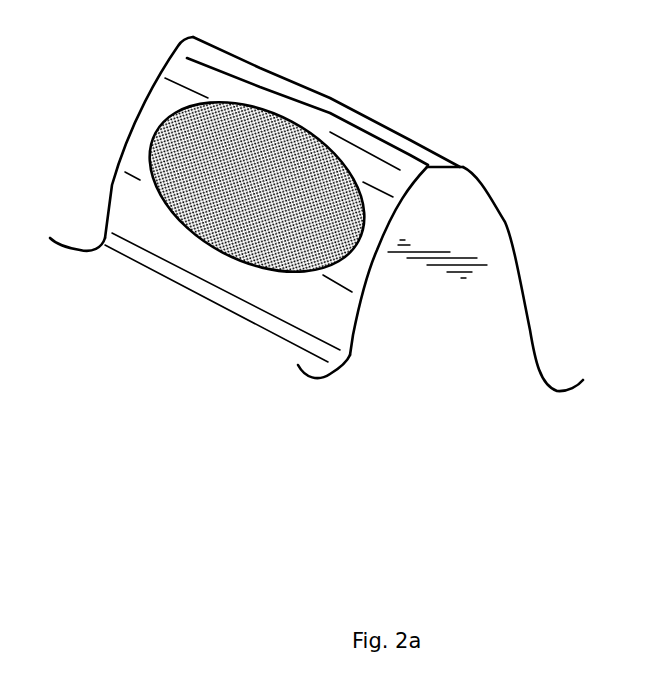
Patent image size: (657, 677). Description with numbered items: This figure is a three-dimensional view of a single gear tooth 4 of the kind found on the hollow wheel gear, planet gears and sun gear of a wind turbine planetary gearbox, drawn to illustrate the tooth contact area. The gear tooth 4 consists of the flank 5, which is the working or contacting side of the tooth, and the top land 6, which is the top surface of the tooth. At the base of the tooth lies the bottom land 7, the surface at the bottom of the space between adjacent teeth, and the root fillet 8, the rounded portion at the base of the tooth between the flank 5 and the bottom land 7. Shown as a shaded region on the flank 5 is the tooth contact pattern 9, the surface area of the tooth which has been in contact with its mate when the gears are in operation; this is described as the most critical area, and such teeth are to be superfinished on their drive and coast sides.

The gear tooth 4 is at (418, 333).
The flank 5 is at (157, 95).
The top land 6 is at (412, 137).
The bottom land 7 is at (90, 267).
The root fillet 8 is at (358, 358).
The tooth contact pattern 9 is at (288, 157).